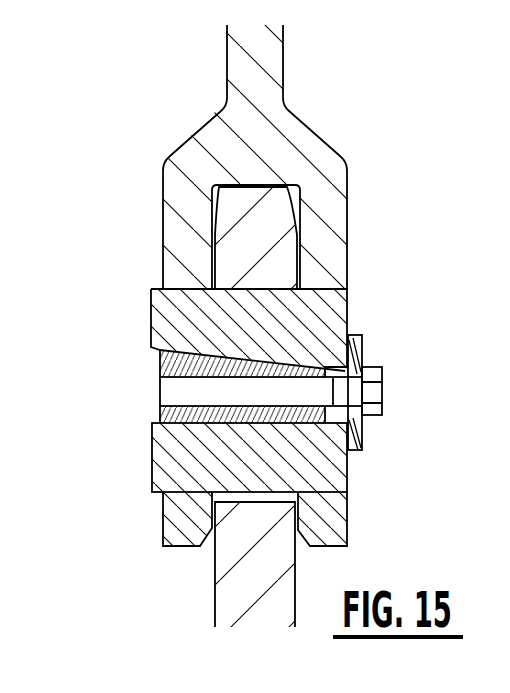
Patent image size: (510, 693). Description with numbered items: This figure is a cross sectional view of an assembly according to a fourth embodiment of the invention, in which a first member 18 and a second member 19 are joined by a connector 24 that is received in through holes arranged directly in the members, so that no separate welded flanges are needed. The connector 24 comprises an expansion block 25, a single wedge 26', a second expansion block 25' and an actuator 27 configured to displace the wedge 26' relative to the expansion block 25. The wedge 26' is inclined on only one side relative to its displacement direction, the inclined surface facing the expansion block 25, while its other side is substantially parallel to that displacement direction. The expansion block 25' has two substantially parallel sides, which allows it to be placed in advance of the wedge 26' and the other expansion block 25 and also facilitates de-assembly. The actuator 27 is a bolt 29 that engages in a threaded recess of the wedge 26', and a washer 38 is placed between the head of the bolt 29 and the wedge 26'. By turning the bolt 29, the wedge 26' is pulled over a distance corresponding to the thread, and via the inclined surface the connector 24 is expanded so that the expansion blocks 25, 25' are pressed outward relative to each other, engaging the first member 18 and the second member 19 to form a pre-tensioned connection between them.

The second member 19 is at (170, 83).
The expansion block 25 is at (218, 282).
The connector 24 is at (110, 337).
The wedge 26' is at (191, 394).
The actuator 27 is at (373, 375).
The bolt 29 is at (372, 391).
The washer 38 is at (358, 355).
The expansion block 25' is at (207, 484).
The first member 18 is at (237, 595).